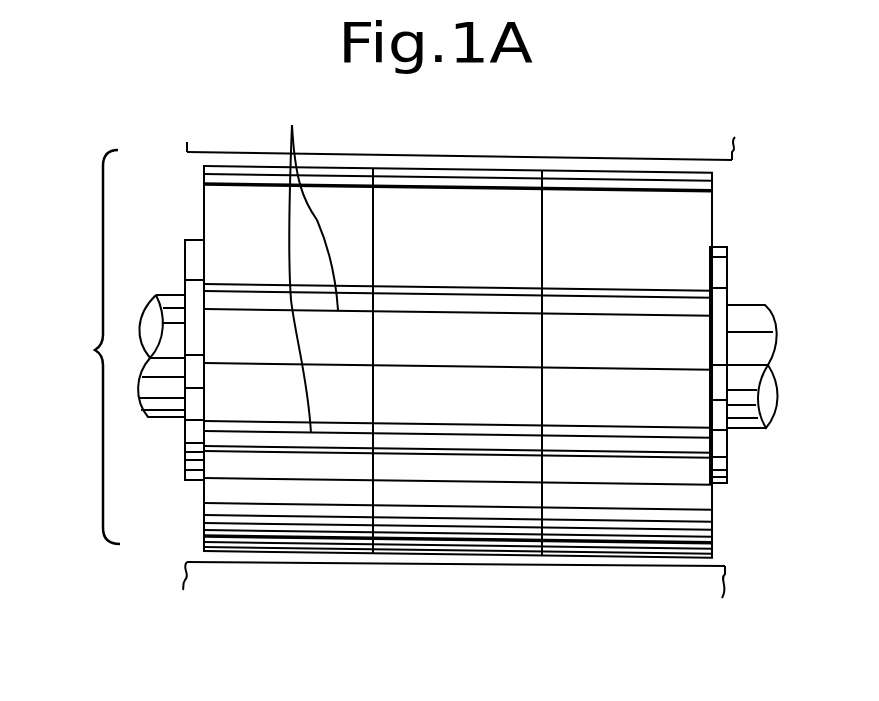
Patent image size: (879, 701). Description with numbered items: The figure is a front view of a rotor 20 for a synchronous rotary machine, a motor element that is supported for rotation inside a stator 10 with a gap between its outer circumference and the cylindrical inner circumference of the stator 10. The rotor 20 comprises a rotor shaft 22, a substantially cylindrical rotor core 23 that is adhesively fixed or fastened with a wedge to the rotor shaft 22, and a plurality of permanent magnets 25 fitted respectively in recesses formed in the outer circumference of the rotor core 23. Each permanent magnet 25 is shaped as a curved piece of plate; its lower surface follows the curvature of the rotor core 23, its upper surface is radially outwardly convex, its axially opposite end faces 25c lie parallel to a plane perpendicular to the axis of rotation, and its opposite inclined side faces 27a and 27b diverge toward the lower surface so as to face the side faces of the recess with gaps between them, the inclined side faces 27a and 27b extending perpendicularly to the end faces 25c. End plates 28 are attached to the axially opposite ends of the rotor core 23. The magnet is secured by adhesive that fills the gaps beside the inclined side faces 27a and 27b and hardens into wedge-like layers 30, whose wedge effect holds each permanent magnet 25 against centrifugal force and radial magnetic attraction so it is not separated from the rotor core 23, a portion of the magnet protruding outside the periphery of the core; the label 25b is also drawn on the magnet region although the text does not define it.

The stator 10 is at (200, 140).
The rotor 20 is at (95, 348).
The rotor shaft 22 is at (168, 412).
The rotor core 23 is at (267, 442).
The permanent magnet 25 is at (502, 510).
The groove portion 25b is at (438, 473).
The end face 25c is at (367, 498).
The inclined side face 27a is at (415, 452).
The inclined side face 27b is at (385, 540).
The end plate 28 is at (190, 262).
The wedge-like layer of adhesive 30 is at (305, 260).